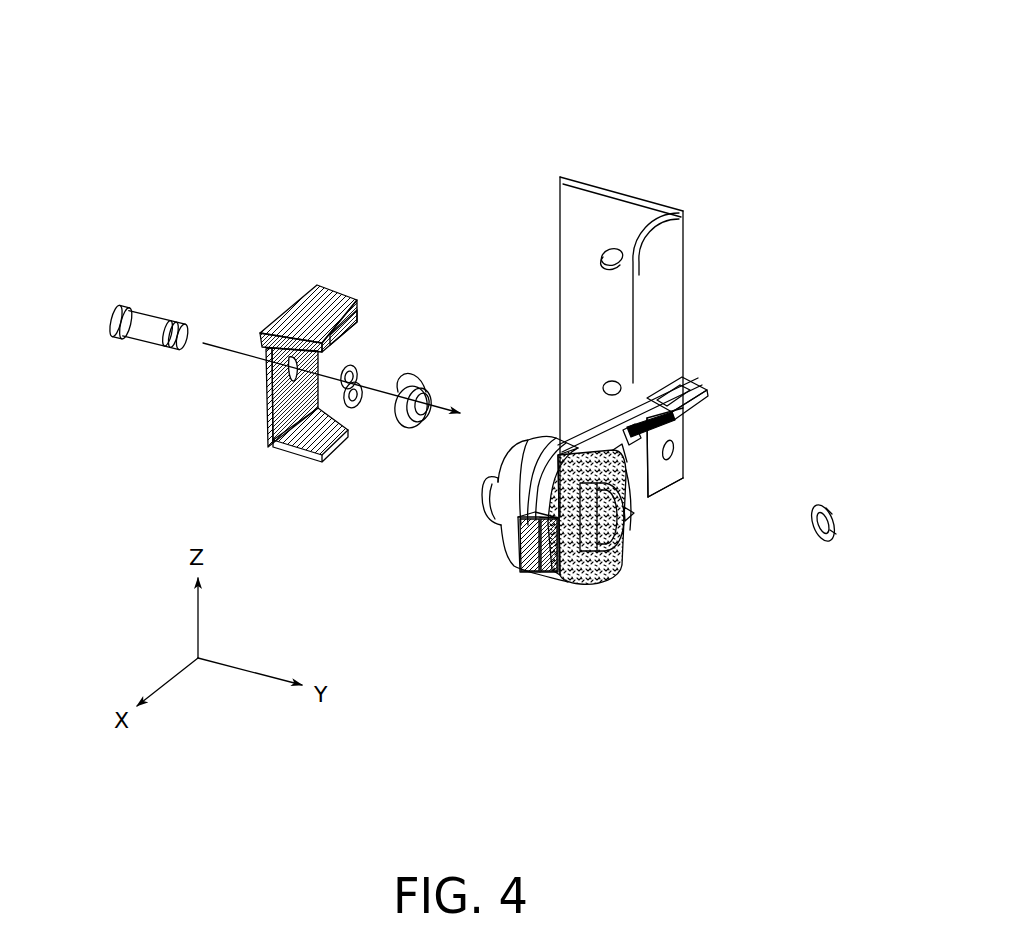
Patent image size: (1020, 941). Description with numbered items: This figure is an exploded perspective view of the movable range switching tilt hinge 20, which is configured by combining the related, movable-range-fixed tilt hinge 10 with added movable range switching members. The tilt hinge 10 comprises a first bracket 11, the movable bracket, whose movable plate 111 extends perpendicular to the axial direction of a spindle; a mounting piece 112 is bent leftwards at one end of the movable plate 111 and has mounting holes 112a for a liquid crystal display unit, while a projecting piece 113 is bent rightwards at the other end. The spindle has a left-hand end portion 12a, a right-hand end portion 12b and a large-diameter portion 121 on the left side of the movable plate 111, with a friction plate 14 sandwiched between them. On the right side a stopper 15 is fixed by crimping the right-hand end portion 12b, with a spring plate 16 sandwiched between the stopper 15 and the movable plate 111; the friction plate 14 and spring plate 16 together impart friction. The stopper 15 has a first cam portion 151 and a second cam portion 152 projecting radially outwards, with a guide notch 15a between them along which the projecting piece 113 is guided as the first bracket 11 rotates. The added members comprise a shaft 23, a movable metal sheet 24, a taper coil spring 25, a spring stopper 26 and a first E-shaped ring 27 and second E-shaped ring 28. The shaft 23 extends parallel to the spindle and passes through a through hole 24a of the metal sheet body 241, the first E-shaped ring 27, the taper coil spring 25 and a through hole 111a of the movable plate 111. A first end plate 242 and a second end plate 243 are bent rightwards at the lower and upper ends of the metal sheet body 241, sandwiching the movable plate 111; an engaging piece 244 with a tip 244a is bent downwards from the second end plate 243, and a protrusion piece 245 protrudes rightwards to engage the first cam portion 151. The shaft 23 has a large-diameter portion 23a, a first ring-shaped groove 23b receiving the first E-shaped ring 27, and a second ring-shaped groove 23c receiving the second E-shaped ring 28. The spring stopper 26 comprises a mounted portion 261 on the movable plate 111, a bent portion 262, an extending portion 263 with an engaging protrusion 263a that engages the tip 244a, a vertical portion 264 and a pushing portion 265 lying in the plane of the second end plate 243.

The movable range switching tilt hinge 20 is at (729, 124).
The tilt hinge 10 is at (626, 328).
The first bracket 11 is at (626, 333).
The movable plate 111 is at (675, 298).
The through hole 111a is at (640, 462).
The mounting piece 112 is at (622, 195).
The mounting holes 112a is at (600, 258).
The left-hand end portion 12a is at (486, 497).
The right-hand end portion 12b is at (630, 536).
The large-diameter portion 121 is at (502, 538).
The friction plate 14 is at (520, 445).
The first cam portion 151 is at (548, 455).
The stopper 15 is at (614, 546).
The guide notch 15a is at (570, 572).
The second cam portion 152 is at (620, 560).
The spring plate 16 is at (515, 597).
The projecting piece 113 is at (546, 574).
The shaft 23 is at (118, 309).
The large-diameter portion 23a is at (114, 312).
The first ring-shaped groove 23b is at (128, 308).
The second ring-shaped groove 23c is at (178, 325).
The movable metal sheet 24 is at (306, 379).
The through hole 24a is at (272, 397).
The metal sheet body 241 is at (242, 399).
The first end plate 242 is at (290, 458).
The second end plate 243 is at (324, 301).
The engaging piece 244 is at (384, 333).
The tip 244a is at (340, 342).
The protrusion piece 245 is at (270, 322).
The taper coil spring 25 is at (411, 428).
The first E-shaped ring 27 is at (354, 408).
The spring stopper 26 is at (715, 409).
The mounted portion 261 is at (674, 454).
The bent portion 262 is at (702, 387).
The extending portion 263 is at (685, 481).
The engaging protrusion 263a is at (690, 380).
The vertical portion 264 is at (655, 433).
The pushing portion 265 is at (690, 411).
The second E-shaped ring 28 is at (832, 541).